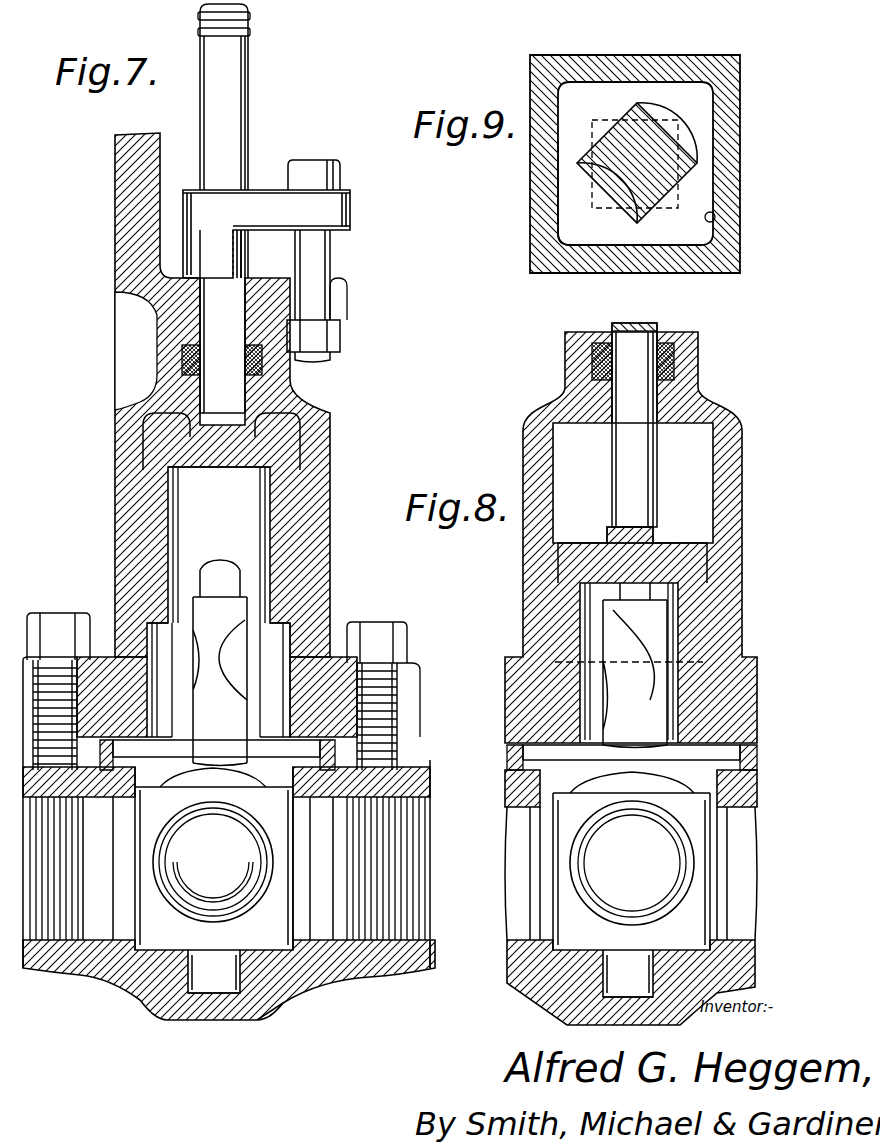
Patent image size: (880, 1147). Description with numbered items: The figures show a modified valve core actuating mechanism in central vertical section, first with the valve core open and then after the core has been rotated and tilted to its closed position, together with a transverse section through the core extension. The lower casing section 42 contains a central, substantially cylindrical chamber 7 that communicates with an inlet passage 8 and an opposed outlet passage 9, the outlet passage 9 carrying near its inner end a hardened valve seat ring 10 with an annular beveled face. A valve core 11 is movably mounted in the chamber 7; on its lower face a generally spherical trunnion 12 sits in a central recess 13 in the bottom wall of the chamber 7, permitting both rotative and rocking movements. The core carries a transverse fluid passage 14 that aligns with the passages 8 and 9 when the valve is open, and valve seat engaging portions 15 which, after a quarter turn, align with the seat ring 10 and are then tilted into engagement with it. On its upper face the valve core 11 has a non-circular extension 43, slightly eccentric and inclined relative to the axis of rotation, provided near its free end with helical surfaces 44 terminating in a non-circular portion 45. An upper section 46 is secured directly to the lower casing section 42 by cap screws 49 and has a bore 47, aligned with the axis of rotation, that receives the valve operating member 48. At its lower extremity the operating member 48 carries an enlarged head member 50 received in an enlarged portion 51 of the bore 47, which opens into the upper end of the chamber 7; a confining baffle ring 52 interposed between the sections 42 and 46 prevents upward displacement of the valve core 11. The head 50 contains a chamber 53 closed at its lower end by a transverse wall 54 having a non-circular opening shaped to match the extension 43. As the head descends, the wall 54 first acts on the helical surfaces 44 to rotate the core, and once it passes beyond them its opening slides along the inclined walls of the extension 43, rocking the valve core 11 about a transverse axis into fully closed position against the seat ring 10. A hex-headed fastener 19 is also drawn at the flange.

In FIG. 7, the chamber 7 is at (143, 957).
In FIG. 8, the chamber 7 is at (522, 993).
In FIG. 7, the inlet passage 8 is at (70, 884).
In FIG. 7, the outlet passage 9 is at (433, 890).
In FIG. 8, the outlet passage 9 is at (629, 663).
In FIG. 7, the valve seat ring 10 is at (320, 910).
In FIG. 8, the valve seat ring 10 is at (733, 858).
In FIG. 7, the valve core 11 is at (214, 858).
In FIG. 8, the valve core 11 is at (631, 871).
In FIG. 7, the trunnion 12 is at (207, 978).
In FIG. 8, the trunnion 12 is at (613, 983).
In FIG. 7, the recess 13 is at (257, 1020).
In FIG. 8, the transverse fluid passage 14 is at (632, 863).
In FIG. 7, the valve seat engaging portions 15 is at (145, 848).
In FIG. 8, the valve seat engaging portions 15 is at (543, 893).
In FIG. 7, the flange bolt 19 is at (397, 620).
In FIG. 7, the lower casing section 42 is at (403, 980).
In FIG. 7, the extension 43 is at (220, 698).
In FIG. 9, the extension 43 is at (700, 168).
In FIG. 8, the extension 43 is at (635, 704).
In FIG. 7, the helical surfaces 44 is at (220, 648).
In FIG. 9, the helical surfaces 44 is at (695, 140).
In FIG. 8, the helical surfaces 44 is at (635, 650).
In FIG. 7, the non-circular portion 45 is at (218, 600).
In FIG. 8, the non-circular portion 45 is at (630, 612).
In FIG. 7, the upper section 46 is at (325, 460).
In FIG. 8, the upper section 46 is at (742, 457).
In FIG. 7, the bore 47 is at (248, 386).
In FIG. 7, the valve operating member 48 is at (205, 103).
In FIG. 7, the cap screws 49 is at (58, 613).
In FIG. 7, the enlarged head member 50 is at (283, 443).
In FIG. 9, the enlarged head member 50 is at (740, 73).
In FIG. 8, the enlarged head member 50 is at (715, 550).
In FIG. 7, the enlarged portion of the bore 51 is at (297, 623).
In FIG. 7, the confining baffle ring 52 is at (280, 753).
In FIG. 8, the confining baffle ring 52 is at (743, 752).
In FIG. 7, the chamber 53 is at (219, 545).
In FIG. 9, the chamber 53 is at (717, 217).
In FIG. 8, the chamber 53 is at (660, 568).
In FIG. 7, the transverse wall 54 is at (187, 570).
In FIG. 9, the transverse wall 54 is at (587, 218).